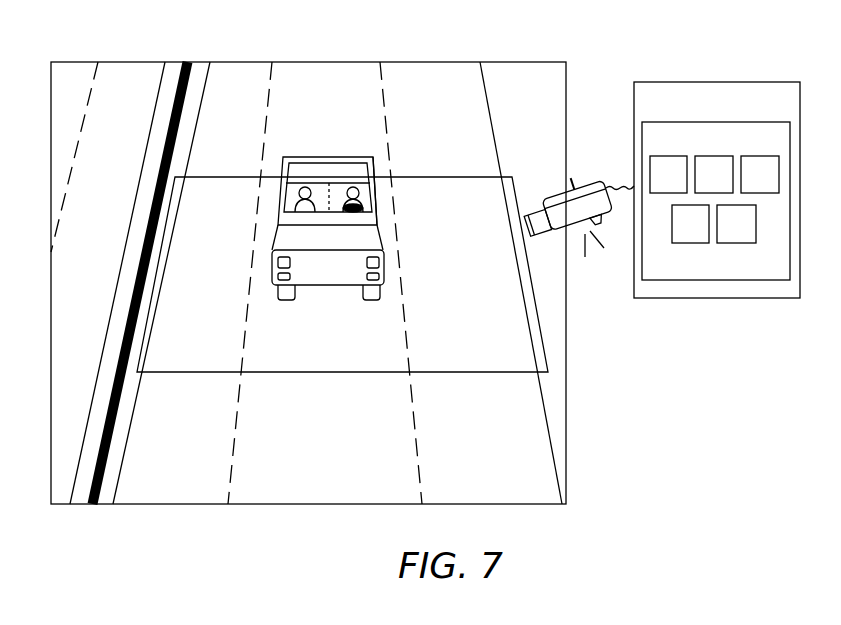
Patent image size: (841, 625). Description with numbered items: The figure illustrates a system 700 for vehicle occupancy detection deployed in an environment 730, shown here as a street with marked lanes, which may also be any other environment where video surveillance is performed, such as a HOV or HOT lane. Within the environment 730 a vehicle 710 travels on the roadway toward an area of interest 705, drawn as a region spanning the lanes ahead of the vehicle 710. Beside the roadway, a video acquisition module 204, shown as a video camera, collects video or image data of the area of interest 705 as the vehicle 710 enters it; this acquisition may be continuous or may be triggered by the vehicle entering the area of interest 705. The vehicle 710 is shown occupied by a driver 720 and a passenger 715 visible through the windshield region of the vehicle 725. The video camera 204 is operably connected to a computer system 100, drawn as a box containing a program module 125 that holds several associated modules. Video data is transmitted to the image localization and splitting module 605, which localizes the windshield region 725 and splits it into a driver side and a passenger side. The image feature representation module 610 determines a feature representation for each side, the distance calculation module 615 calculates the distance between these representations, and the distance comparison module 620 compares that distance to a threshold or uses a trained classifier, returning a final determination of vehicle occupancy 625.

The computer system 100 is at (733, 82).
The program module 125 is at (688, 122).
The video acquisition module 204 is at (601, 183).
The image localization and splitting module 605 is at (668, 174).
The image feature representation module 610 is at (714, 174).
The distance calculation module 615 is at (760, 174).
The distance comparison module 620 is at (690, 224).
The final determination of vehicle occupancy 625 is at (736, 224).
The system 700 is at (609, 389).
The area of interest 705 is at (454, 197).
The vehicle 710 is at (328, 155).
The passenger 715 is at (290, 198).
The driver 720 is at (352, 212).
The windshield region of the vehicle 725 is at (372, 177).
The environment 730 is at (322, 504).